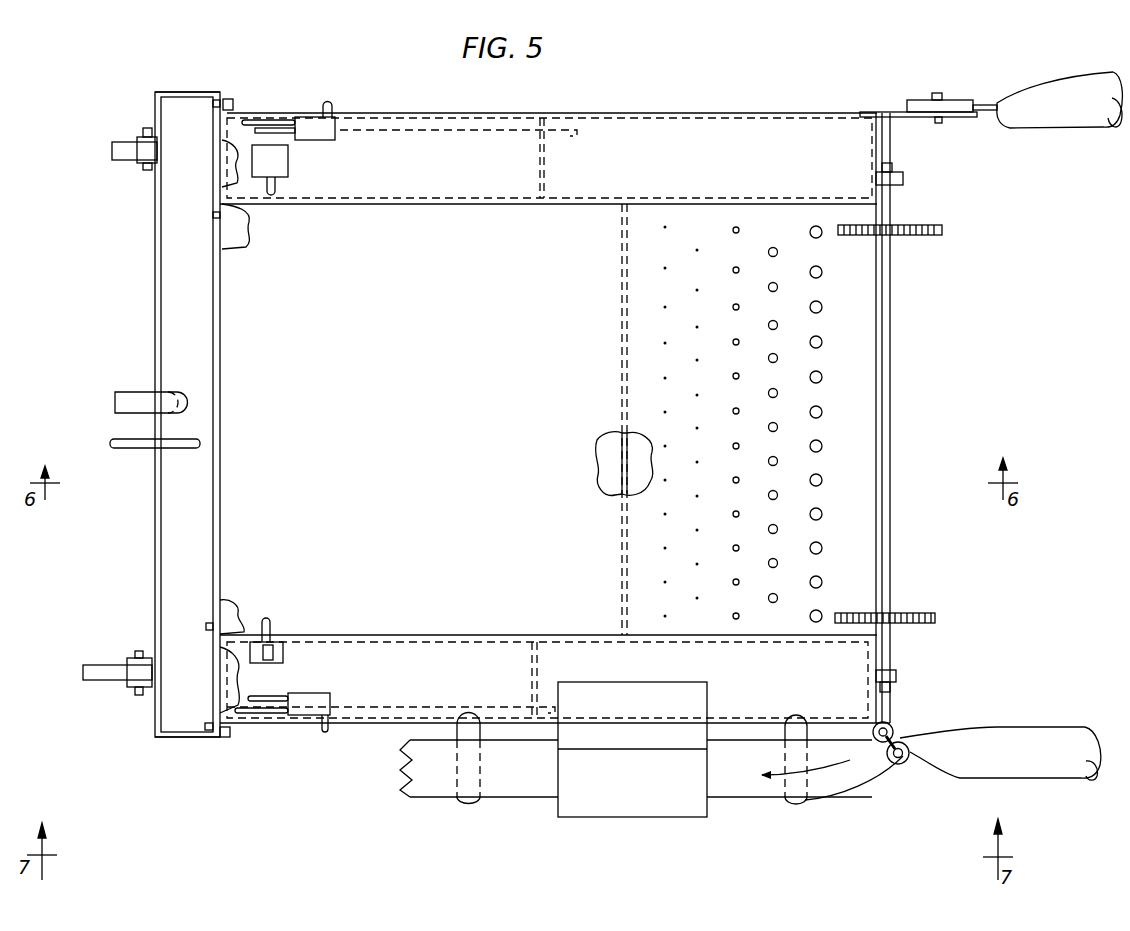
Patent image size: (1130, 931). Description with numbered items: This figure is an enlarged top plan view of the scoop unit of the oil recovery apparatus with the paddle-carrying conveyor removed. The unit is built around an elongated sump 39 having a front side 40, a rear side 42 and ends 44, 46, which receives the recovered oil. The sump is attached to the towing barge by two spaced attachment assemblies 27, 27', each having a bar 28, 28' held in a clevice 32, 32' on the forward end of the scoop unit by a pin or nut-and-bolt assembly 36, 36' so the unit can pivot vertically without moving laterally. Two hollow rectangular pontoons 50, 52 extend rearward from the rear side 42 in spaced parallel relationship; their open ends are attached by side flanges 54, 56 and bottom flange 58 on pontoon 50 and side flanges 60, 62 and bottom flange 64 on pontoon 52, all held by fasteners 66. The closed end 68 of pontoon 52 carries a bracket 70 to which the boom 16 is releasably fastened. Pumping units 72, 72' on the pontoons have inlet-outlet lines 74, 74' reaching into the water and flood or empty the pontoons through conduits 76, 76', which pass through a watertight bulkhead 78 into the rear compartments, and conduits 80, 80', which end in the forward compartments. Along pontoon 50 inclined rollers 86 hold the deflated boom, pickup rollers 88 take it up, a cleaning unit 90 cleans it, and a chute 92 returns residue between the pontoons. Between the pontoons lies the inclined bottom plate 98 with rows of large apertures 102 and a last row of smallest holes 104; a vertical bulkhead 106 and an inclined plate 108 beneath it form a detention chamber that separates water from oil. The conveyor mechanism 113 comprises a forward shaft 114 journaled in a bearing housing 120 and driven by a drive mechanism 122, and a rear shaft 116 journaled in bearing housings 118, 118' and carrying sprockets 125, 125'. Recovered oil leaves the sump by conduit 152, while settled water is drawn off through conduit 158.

The boom 16 is at (1090, 122).
The attachment assembly 27 is at (95, 675).
The attachment assembly 27' is at (111, 142).
The bar 28 is at (95, 668).
The bar 28' is at (113, 140).
The clevice 32 is at (120, 681).
The clevice 32' is at (135, 167).
The pin or nut and bolt assembly 36 is at (129, 707).
The pin or nut and bolt assembly 36' is at (132, 112).
The sump 39 is at (182, 415).
The front side 40 is at (158, 336).
The rear side 42 is at (215, 336).
The end 44 is at (190, 92).
The end 46 is at (180, 738).
The pontoon 50 is at (773, 680).
The pontoon 52 is at (708, 165).
The side flange 54 is at (212, 732).
The side flange 56 is at (210, 623).
The bottom flange 58 is at (224, 680).
The side flange 60 is at (246, 222).
The side flange 62 is at (233, 99).
The bottom flange 64 is at (222, 160).
The fasteners 66 is at (213, 105).
The closed end 68 is at (888, 142).
The bracket 70 is at (966, 118).
The pumping unit 72 is at (325, 693).
The pumping unit 72' is at (337, 139).
The inlet-outlet line 74 is at (340, 741).
The inlet-outlet line 74' is at (346, 102).
The conduit 76 is at (391, 714).
The conduit 76' is at (409, 126).
The bulkhead 78 is at (545, 180).
The conduit 80 is at (268, 686).
The conduit 80' is at (286, 110).
The inclined rollers 86 is at (470, 805).
The pickup rollers 88 is at (899, 765).
The cleaning unit 90 is at (640, 817).
The chute 92 is at (638, 691).
The bottom plate 98 is at (456, 443).
The apertures 102 is at (818, 410).
The smallest holes 104 is at (660, 344).
The vertical bulkhead 106 is at (600, 446).
The inclined plate 108 is at (641, 476).
The conveyor mechanism 113 is at (923, 418).
The forward shaft 114 is at (268, 630).
The rear shaft 116 is at (890, 323).
The bearing housing 118 is at (915, 679).
The bearing housing 118' is at (923, 176).
The bearing housing 120 is at (284, 656).
The drive mechanism 122 is at (288, 170).
The sprocket 125 is at (914, 623).
The sprocket 125' is at (919, 230).
The conduit 152 is at (120, 401).
The conduit 158 is at (134, 448).